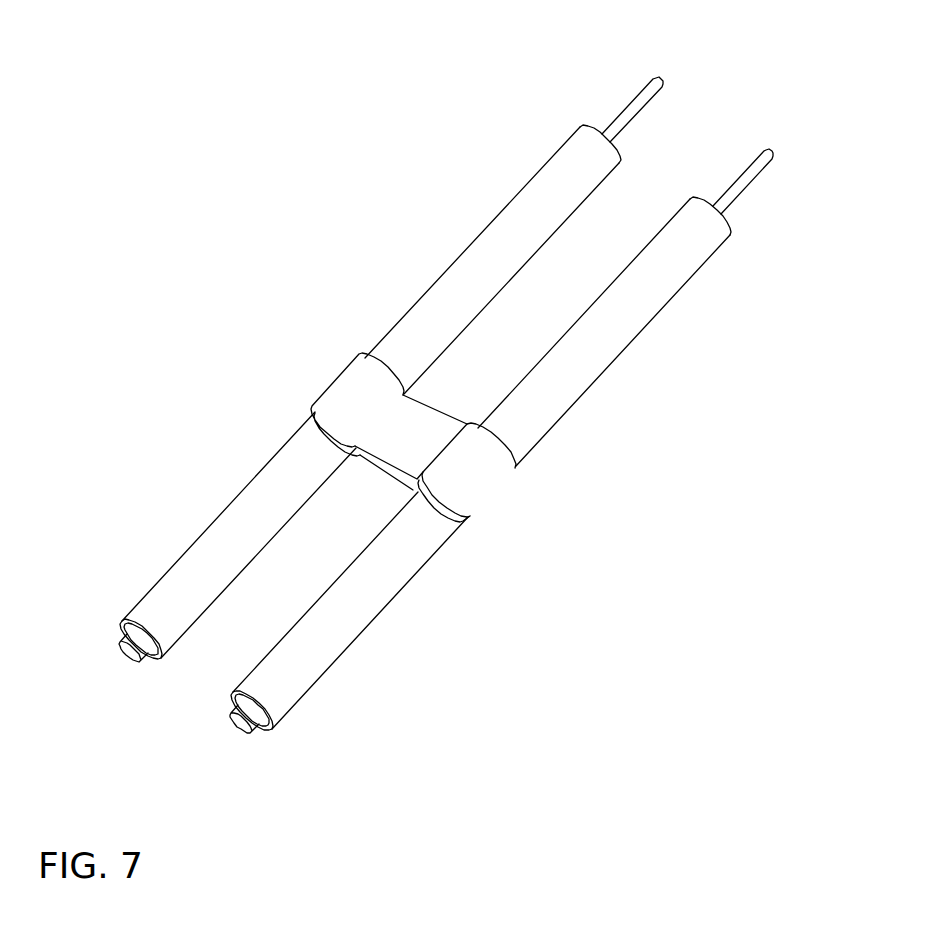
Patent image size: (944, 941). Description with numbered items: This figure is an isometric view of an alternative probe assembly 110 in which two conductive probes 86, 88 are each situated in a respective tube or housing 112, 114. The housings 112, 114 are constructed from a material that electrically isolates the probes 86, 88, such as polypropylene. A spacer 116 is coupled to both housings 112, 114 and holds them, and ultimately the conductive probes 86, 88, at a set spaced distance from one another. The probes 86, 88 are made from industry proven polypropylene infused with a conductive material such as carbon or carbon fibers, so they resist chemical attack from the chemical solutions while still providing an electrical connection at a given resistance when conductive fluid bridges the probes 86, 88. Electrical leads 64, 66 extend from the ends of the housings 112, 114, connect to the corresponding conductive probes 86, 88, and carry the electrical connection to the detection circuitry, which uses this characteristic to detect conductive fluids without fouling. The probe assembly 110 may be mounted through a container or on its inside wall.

The probe assembly 110 is at (217, 272).
The tube or housing 112 is at (210, 525).
The tube or housing 114 is at (367, 626).
The electrical lead 64 is at (631, 101).
The electrical lead 66 is at (755, 175).
The conductive probe 86 is at (125, 655).
The conductive probe 88 is at (233, 725).
The spacer 116 is at (432, 428).